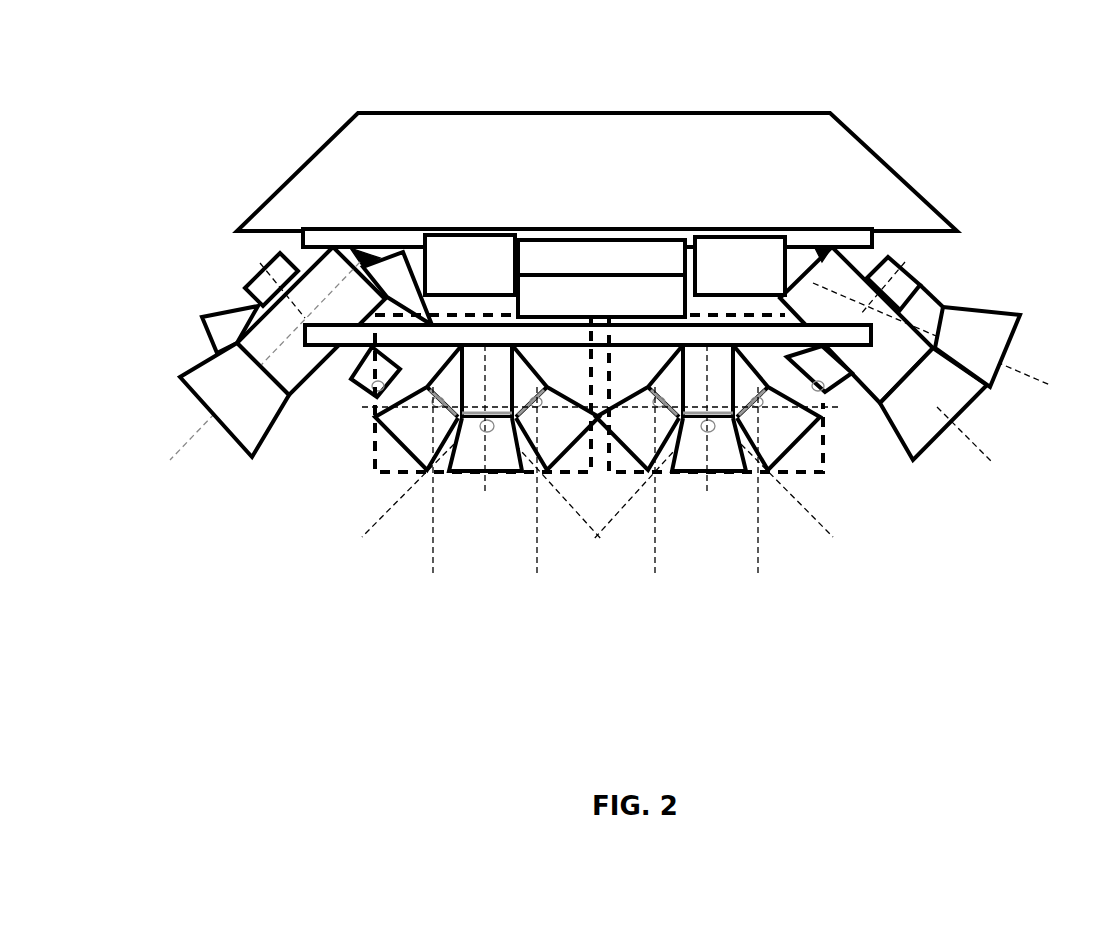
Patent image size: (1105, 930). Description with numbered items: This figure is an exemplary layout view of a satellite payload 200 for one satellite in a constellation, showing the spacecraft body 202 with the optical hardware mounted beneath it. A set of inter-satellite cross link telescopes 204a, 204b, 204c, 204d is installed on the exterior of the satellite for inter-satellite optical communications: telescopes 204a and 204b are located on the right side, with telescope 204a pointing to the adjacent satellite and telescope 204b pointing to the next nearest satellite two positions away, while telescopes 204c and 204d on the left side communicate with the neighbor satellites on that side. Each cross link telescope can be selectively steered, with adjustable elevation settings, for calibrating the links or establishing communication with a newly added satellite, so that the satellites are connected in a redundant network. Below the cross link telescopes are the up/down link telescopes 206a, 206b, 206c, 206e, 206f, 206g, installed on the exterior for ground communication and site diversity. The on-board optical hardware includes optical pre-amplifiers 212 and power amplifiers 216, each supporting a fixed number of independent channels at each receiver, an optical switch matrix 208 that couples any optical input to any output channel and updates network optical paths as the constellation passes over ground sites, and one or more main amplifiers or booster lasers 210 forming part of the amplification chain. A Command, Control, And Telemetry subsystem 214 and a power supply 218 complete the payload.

The satellite payload 200 is at (579, 133).
The spacecraft body 202 is at (832, 127).
The inter-satellite cross link telescope 204a is at (1000, 312).
The inter-satellite cross link telescope 204b is at (932, 443).
The inter-satellite cross link telescope 204c is at (208, 335).
The inter-satellite cross link telescope 204d is at (240, 437).
The up/down link telescope 206a is at (378, 432).
The up/down link telescope 206b is at (463, 472).
The up/down link telescope 206c is at (547, 447).
The up/down link telescope 206e is at (599, 448).
The up/down link telescope 206f is at (722, 465).
The up/down link telescope 206g is at (808, 428).
The optical switch matrix 208 is at (640, 240).
The main amplifier 210 is at (533, 297).
The optical pre-amplifier 212 is at (443, 258).
The Command, Control, And Telemetry subsystem 214 is at (308, 233).
The power amplifier 216 is at (763, 237).
The power supply 218 is at (873, 237).